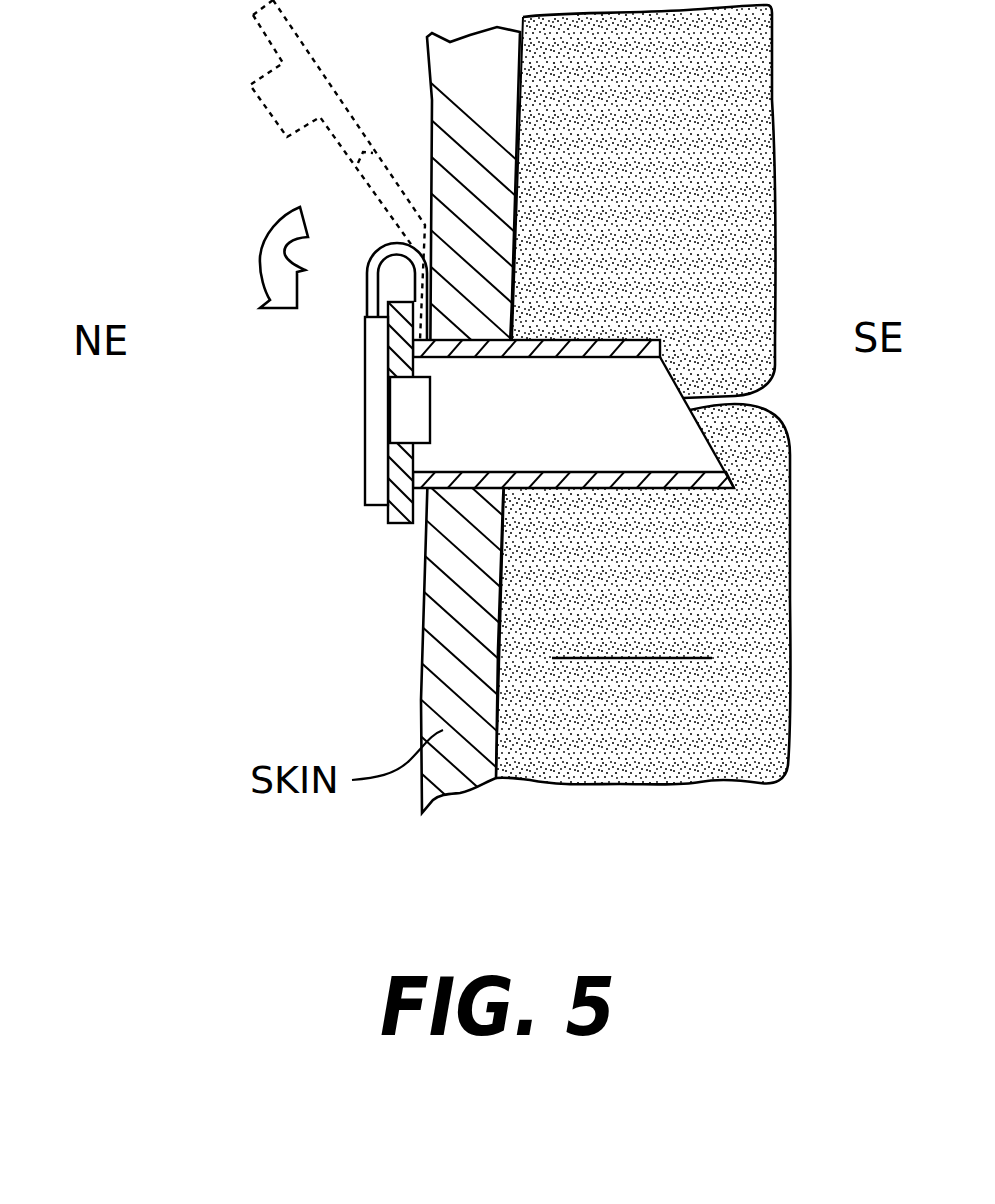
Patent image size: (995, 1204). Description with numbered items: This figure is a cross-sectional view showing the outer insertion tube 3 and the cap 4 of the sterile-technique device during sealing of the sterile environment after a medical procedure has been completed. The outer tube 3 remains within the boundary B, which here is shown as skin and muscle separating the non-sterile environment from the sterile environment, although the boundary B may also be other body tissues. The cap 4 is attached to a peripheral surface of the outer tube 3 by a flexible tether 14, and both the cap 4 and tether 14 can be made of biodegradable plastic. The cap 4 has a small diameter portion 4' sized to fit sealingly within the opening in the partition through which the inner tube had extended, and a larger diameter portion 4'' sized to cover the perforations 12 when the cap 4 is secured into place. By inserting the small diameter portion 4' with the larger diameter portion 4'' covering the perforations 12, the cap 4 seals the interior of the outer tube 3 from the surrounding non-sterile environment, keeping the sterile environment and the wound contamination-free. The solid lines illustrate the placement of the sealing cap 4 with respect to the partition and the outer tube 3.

The outer insertion tube 3 is at (634, 495).
The cap 4 is at (266, 170).
The small diameter portion 4' is at (463, 414).
The larger diameter portion 4'' is at (323, 411).
The perforations 12 is at (410, 361).
The flexible tether 14 is at (363, 302).
The boundary B is at (700, 168).